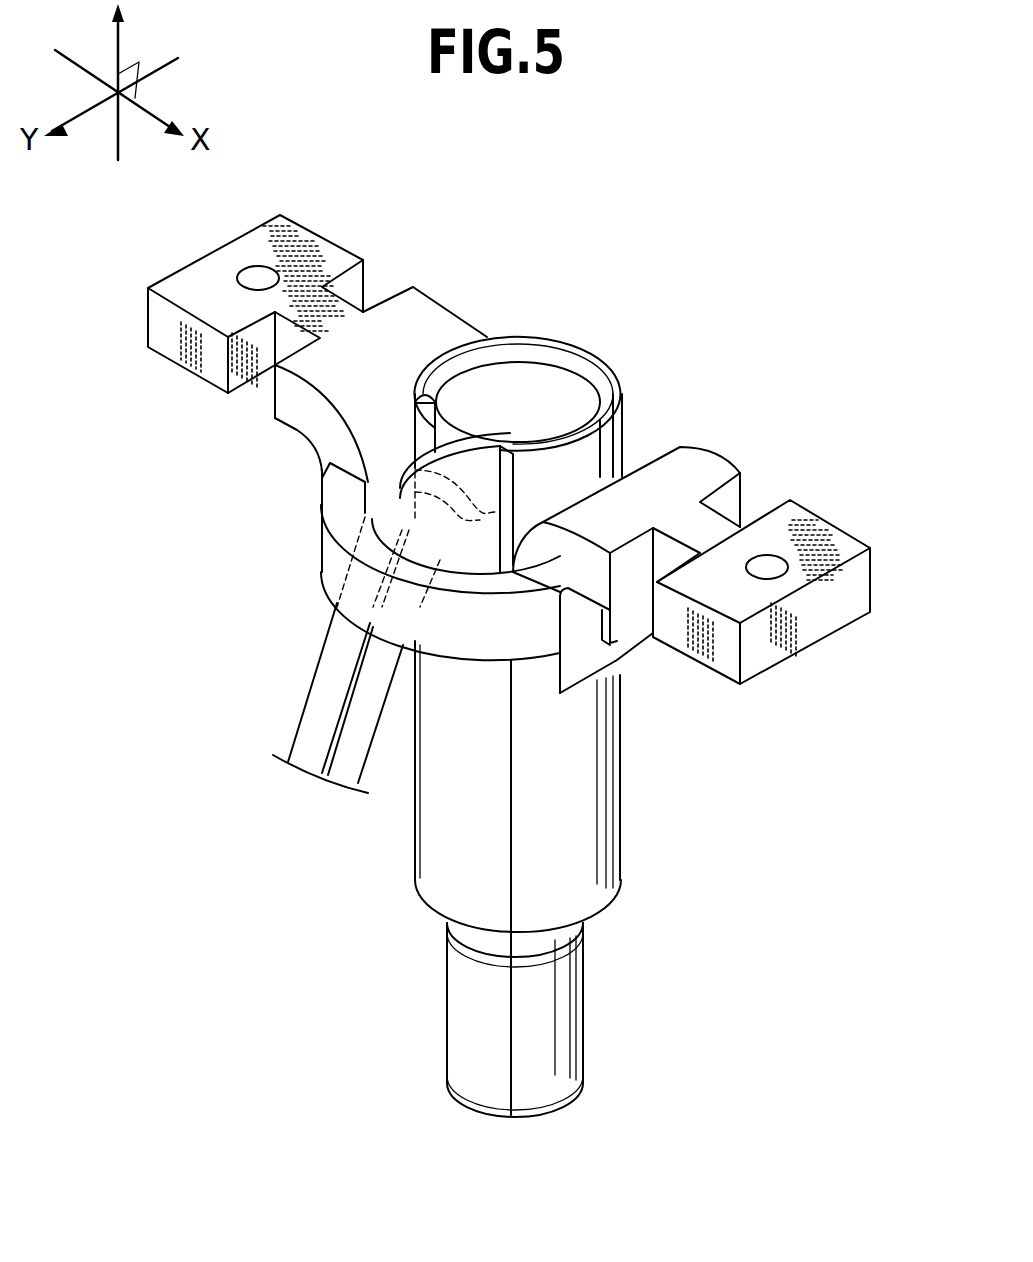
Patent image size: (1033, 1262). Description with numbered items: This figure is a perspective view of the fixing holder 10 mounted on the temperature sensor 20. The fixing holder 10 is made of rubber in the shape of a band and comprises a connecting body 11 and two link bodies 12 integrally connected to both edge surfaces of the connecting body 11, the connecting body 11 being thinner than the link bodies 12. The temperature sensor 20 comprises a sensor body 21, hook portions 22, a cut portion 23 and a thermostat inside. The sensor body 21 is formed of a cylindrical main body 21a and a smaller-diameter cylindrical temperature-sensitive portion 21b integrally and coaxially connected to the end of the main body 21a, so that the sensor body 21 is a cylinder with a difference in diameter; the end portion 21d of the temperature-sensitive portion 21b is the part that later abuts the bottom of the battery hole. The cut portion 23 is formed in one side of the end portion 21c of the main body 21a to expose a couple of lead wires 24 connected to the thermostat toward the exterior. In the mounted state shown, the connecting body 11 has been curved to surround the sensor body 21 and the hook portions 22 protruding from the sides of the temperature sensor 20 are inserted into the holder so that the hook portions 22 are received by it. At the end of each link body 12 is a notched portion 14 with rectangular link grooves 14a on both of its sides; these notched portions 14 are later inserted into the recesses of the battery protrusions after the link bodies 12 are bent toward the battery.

The fixing holder 10 is at (205, 497).
The connecting body 11 is at (314, 563).
The link body 12 is at (458, 300).
The notched portion 14 is at (294, 316).
The link groove 14a is at (353, 290).
The temperature sensor 20 is at (640, 803).
The sensor body 21 is at (735, 883).
The main body 21a is at (633, 850).
The temperature-sensitive portion 21b is at (600, 1000).
The end portion 21c is at (617, 407).
The end portion 21d is at (570, 1118).
The hook portion 22 is at (628, 640).
The cut portion 23 is at (427, 430).
The lead wire 24 is at (315, 705).